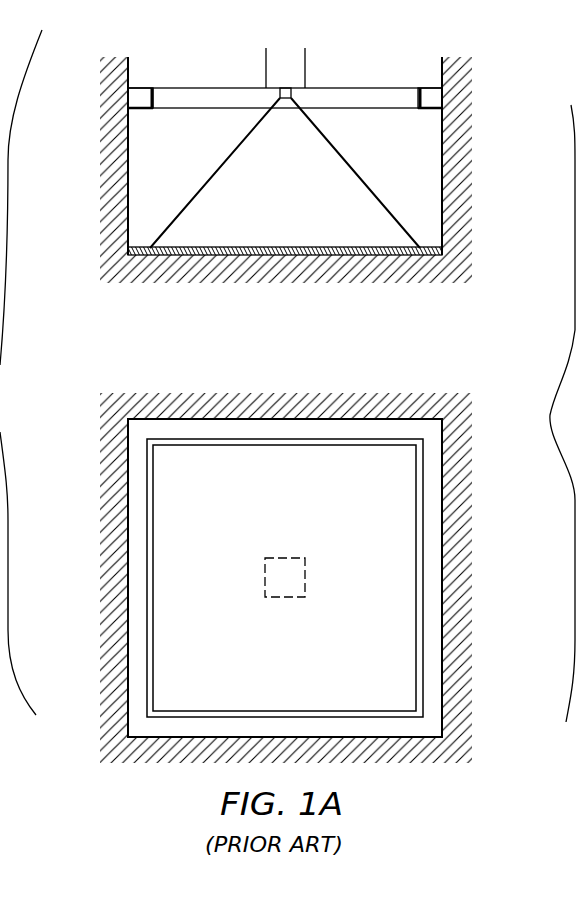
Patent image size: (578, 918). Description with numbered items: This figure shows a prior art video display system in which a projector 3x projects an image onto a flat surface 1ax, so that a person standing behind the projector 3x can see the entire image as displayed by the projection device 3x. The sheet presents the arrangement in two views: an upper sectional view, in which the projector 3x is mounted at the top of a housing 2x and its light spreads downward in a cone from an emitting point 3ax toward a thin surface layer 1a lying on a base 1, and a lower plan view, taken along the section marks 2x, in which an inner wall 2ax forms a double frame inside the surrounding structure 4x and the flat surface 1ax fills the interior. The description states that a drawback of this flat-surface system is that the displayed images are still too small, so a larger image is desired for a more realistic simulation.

The substrate 1 is at (270, 257).
The substrate surface plate 1a is at (336, 247).
The flat surface 1ax is at (372, 597).
The housing 2x is at (85, 57).
The housing inner wall 2ax is at (442, 195).
The projector 3x is at (283, 57).
The light emitting point 3ax is at (283, 92).
The support frame 4x is at (432, 97).